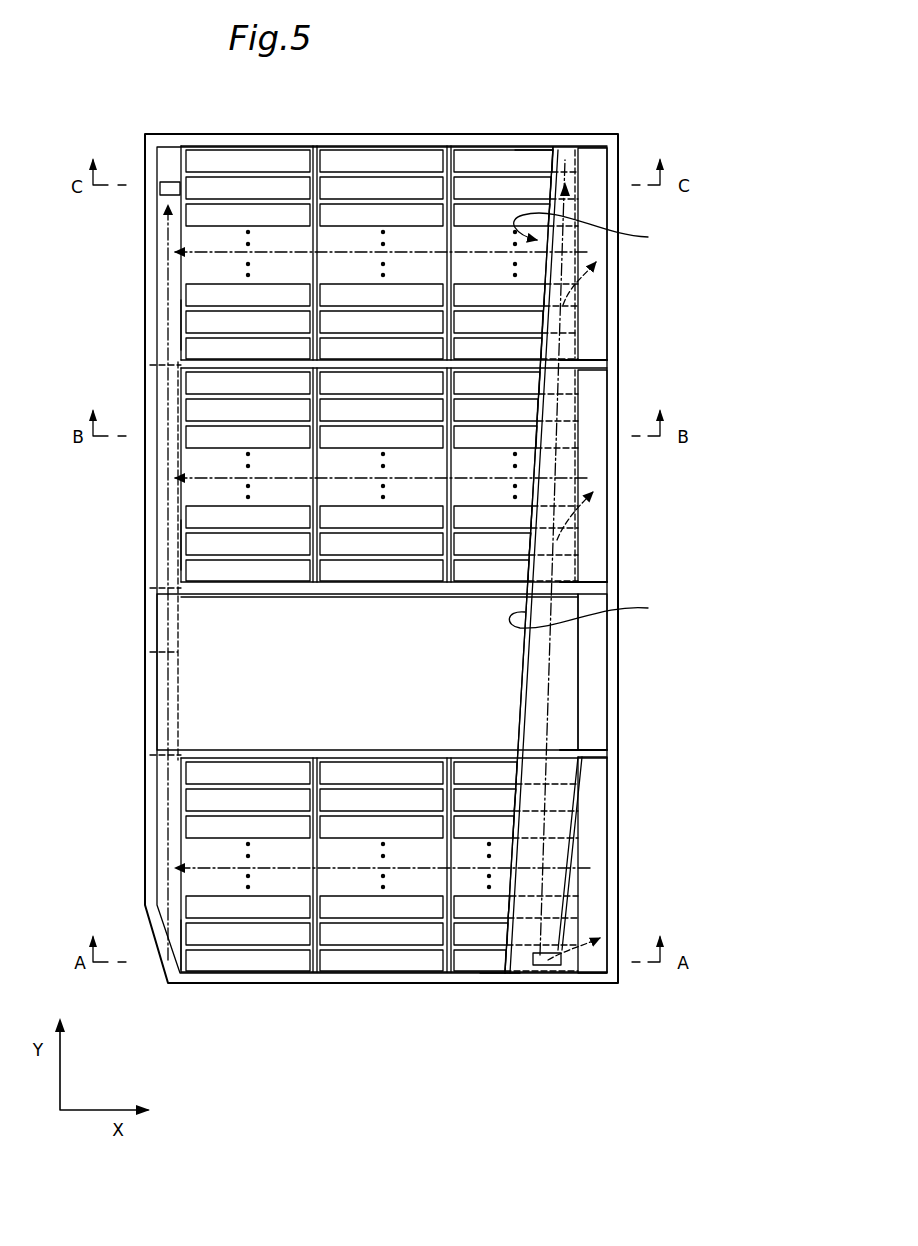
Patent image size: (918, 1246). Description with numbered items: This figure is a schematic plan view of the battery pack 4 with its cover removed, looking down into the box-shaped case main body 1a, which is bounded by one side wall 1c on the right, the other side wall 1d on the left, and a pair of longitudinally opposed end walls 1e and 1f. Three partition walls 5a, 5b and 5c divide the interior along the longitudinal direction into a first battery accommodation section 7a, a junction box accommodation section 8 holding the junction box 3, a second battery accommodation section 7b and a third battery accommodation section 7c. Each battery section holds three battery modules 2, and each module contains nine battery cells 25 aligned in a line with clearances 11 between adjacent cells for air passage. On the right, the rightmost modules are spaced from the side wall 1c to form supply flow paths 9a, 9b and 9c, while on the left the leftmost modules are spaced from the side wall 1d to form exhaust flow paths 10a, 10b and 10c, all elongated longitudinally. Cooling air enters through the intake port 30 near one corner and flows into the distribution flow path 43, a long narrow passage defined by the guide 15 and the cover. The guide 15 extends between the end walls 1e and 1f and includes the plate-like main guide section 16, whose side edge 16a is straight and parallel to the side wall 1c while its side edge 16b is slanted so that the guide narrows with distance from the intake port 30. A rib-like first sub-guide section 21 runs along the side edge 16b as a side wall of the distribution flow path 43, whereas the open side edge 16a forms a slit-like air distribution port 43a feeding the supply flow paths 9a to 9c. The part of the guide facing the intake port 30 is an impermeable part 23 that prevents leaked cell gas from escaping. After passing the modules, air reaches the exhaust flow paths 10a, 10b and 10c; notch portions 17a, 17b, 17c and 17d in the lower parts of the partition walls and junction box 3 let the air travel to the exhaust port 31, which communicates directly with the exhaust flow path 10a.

The battery pack 4 is at (676, 96).
The case main body 1a is at (147, 312).
The side wall 1c is at (612, 672).
The side wall 1d is at (147, 686).
The end wall 1e is at (522, 160).
The end wall 1f is at (498, 978).
The battery module 2 is at (184, 152).
The junction box 3 is at (190, 628).
The battery cell 25 is at (210, 152).
The clearance 11 is at (248, 166).
The exhaust port 31 is at (165, 178).
The exhaust flow path 10c is at (162, 253).
The exhaust flow path 10b is at (162, 494).
The exhaust flow path 10a is at (160, 828).
The junction box accommodation section 8 is at (172, 725).
The third battery accommodation section 7c is at (185, 325).
The second battery accommodation section 7b is at (185, 540).
The first battery accommodation section 7a is at (184, 945).
The notch portion 17d is at (158, 368).
The notch portion 17c is at (158, 588).
The notch portion 17b is at (158, 652).
The notch portion 17a is at (158, 755).
The supply flow path 9c is at (590, 158).
The supply flow path 9b is at (595, 385).
The supply flow path 9a is at (603, 965).
The partition wall 5c is at (598, 355).
The partition wall 5b is at (598, 582).
The partition wall 5a is at (598, 750).
The distribution flow path 43 is at (541, 560).
The air distribution port 43a is at (568, 650).
The first sub-guide section 21 is at (525, 675).
The impermeable part 23 is at (518, 965).
The intake port 30 is at (545, 968).
The guide 15 is at (593, 230).
The main guide section 16 is at (588, 328).
The side edge 16a is at (575, 542).
The side edge 16b is at (595, 613).